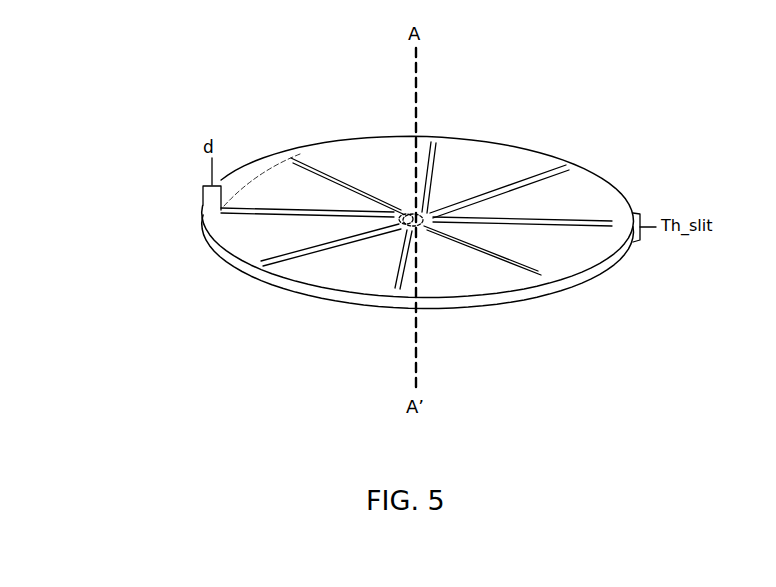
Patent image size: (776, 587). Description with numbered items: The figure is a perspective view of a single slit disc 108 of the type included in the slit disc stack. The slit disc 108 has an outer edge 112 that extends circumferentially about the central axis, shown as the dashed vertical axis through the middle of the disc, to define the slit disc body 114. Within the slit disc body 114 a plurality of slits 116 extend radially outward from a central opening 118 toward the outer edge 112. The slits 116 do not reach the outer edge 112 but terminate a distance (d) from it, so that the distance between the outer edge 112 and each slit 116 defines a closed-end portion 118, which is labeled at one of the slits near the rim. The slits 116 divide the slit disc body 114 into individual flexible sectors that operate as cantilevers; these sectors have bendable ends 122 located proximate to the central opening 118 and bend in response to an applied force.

The slit disc 108 is at (378, 131).
The outer edge 112 is at (300, 291).
The slit disc body 114 is at (332, 160).
The slit 116 is at (543, 182).
The central opening 118 is at (240, 183).
The bendable end 122 is at (399, 233).